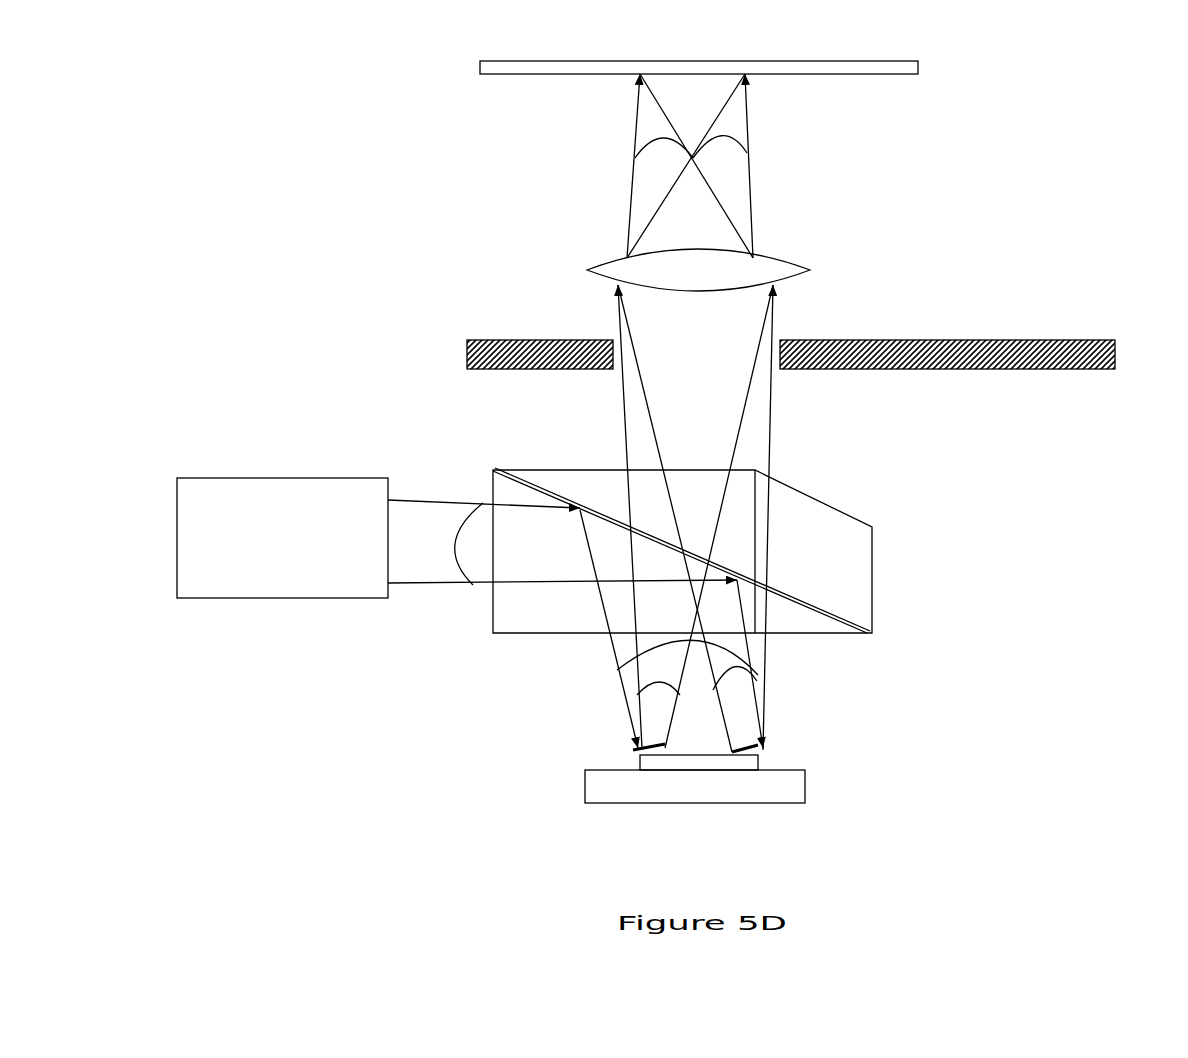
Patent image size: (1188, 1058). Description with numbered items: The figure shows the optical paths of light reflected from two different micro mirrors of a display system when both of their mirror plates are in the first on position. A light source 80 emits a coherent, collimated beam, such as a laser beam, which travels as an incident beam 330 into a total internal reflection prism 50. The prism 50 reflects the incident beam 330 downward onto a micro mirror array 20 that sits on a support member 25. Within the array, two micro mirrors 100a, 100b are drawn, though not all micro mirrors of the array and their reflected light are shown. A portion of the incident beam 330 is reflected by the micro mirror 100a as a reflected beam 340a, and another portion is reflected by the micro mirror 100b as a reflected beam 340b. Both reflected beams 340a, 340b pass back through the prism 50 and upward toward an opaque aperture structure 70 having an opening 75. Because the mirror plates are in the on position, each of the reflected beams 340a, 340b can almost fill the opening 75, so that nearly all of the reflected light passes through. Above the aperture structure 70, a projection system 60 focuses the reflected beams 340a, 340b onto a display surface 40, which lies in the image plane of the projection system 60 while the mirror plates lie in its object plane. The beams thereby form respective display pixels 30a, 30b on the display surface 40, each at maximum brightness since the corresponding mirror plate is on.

The micro mirror array 20 is at (758, 767).
The support member 25 is at (777, 780).
The display pixel 30a is at (628, 80).
The display pixel 30b is at (762, 82).
The display surface 40 is at (890, 65).
The total internal reflection prism 50 is at (850, 565).
The projection system 60 is at (610, 273).
The aperture structure 70 is at (520, 352).
The opening 75 is at (770, 337).
The light source 80 is at (273, 555).
The micro mirror 100a is at (635, 748).
The micro mirror 100b is at (770, 737).
The incident beam 330 is at (622, 688).
The reflected beam 340a is at (625, 447).
The reflected beam 340b is at (768, 450).